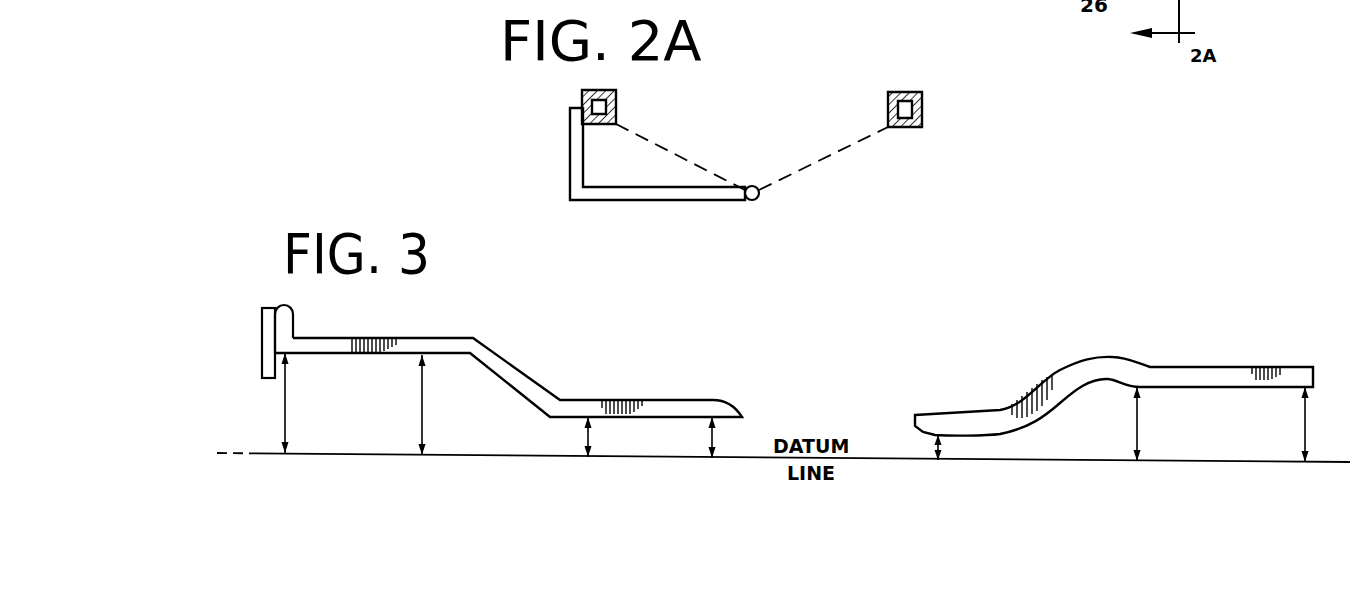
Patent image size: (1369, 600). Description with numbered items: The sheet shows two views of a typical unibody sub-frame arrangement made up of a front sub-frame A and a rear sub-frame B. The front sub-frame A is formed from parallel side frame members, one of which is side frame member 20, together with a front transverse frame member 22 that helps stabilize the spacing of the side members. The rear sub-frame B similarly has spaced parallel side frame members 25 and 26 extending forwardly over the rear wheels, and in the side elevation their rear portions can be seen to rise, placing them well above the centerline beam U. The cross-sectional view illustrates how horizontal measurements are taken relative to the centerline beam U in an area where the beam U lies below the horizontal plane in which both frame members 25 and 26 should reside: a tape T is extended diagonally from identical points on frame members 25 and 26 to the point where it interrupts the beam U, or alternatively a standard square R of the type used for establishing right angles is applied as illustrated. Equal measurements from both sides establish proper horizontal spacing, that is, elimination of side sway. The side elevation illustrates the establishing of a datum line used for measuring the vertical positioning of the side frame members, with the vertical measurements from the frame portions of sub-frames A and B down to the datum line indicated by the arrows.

In FIG. 3, the side frame member 20 is at (507, 362).
In FIG. 3, the front transverse frame member 22 is at (262, 333).
In FIG. 2A, the side frame member 25 is at (612, 110).
In FIG. 3, the side frame member 25 is at (1170, 364).
In FIG. 2A, the side frame member 26 is at (923, 103).
In FIG. 3, the front sub-frame A is at (404, 322).
In FIG. 3, the rear sub-frame B is at (1203, 342).
In FIG. 2A, the standard square R is at (675, 202).
In FIG. 2A, the tape T is at (676, 150).
In FIG. 2A, the centerline beam U is at (758, 198).